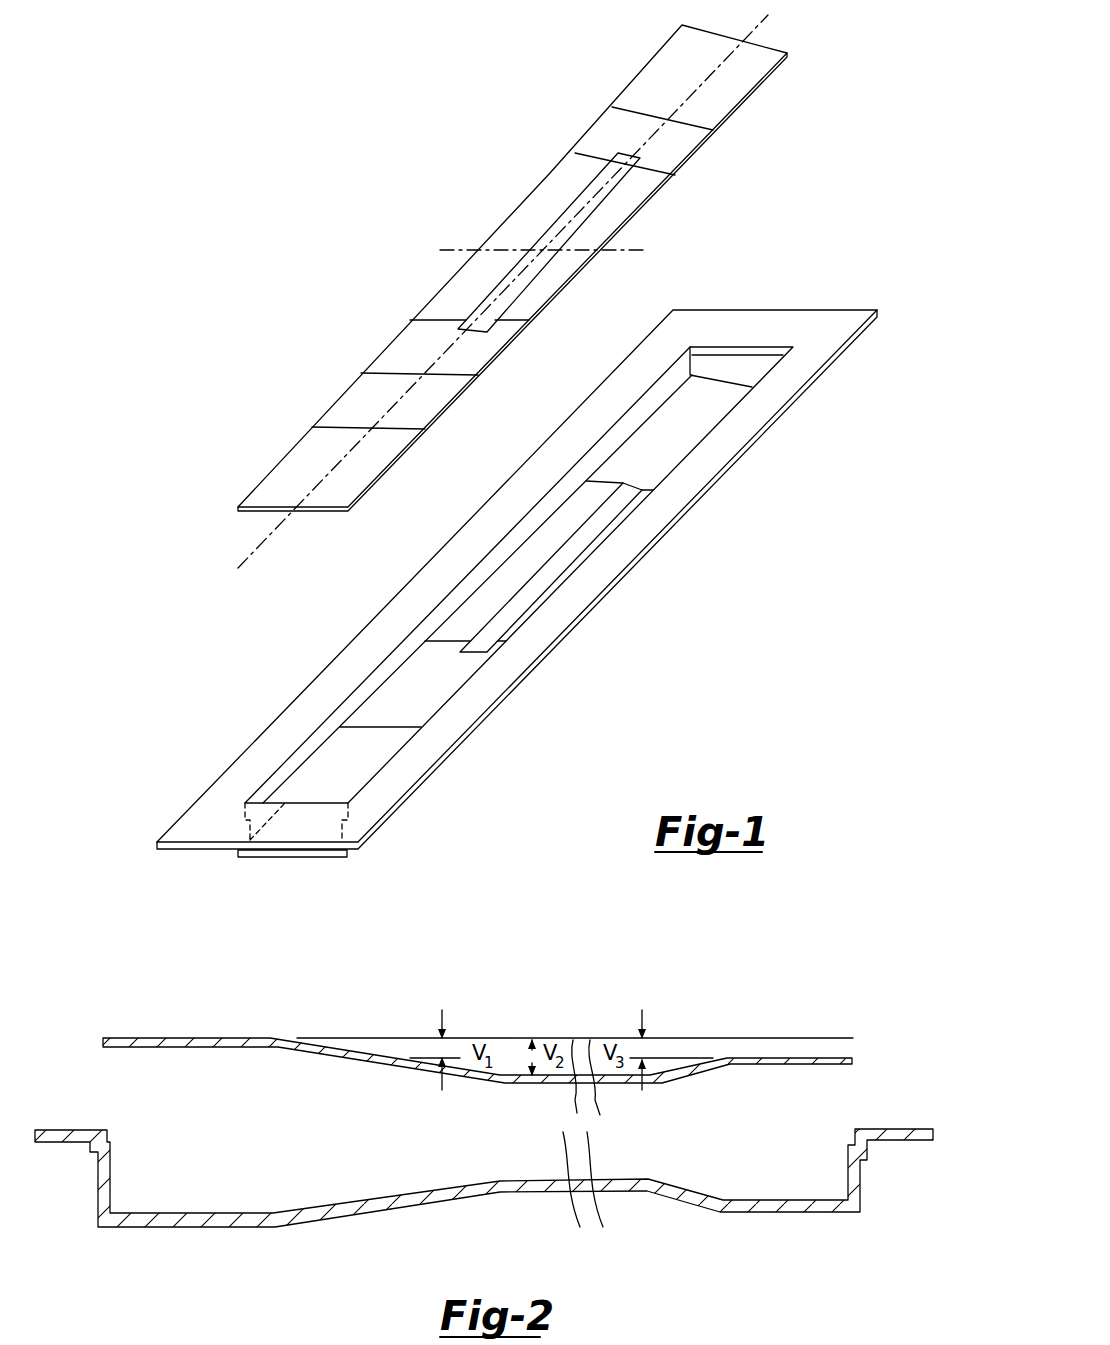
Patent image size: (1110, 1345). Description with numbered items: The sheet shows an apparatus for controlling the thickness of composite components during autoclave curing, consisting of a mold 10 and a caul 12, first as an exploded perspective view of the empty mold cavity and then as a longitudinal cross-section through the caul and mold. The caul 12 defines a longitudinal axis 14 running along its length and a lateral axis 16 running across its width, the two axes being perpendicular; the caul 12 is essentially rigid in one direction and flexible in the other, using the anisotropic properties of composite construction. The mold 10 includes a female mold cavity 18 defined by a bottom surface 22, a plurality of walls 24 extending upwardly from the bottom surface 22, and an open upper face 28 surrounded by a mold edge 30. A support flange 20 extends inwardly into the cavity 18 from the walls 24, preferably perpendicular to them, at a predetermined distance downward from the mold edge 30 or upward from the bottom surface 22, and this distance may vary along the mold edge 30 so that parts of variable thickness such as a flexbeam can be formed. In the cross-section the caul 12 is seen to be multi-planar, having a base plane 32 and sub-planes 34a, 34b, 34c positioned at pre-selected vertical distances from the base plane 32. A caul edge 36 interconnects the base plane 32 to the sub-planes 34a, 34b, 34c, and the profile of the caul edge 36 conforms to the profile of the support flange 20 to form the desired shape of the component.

In FIG. 1, the mold 10 is at (655, 538).
In FIG. 2, the mold 10 is at (907, 1140).
In FIG. 1, the caul 12 is at (550, 173).
In FIG. 2, the caul 12 is at (278, 1038).
In FIG. 1, the longitudinal axis 14 is at (267, 538).
In FIG. 1, the lateral axis 16 is at (460, 252).
In FIG. 1, the female mold cavity 18 is at (663, 452).
In FIG. 2, the female mold cavity 18 is at (703, 1182).
In FIG. 1, the support flange 20 is at (750, 355).
In FIG. 2, the support flange 20 is at (110, 1133).
In FIG. 1, the bottom surface 22 is at (372, 760).
In FIG. 2, the bottom surface 22 is at (232, 1213).
In FIG. 1, the walls 24 is at (735, 372).
In FIG. 2, the walls 24 is at (112, 1187).
In FIG. 2, the open upper face 28 is at (215, 1123).
In FIG. 1, the mold edge 30 is at (707, 348).
In FIG. 2, the mold edge 30 is at (107, 1133).
In FIG. 2, the base plane 32 is at (140, 1038).
In FIG. 2, the sub-plane 34a is at (350, 1045).
In FIG. 2, the sub-plane 34b is at (510, 1067).
In FIG. 2, the sub-plane 34c is at (753, 1052).
In FIG. 2, the caul edge 36 is at (668, 1073).